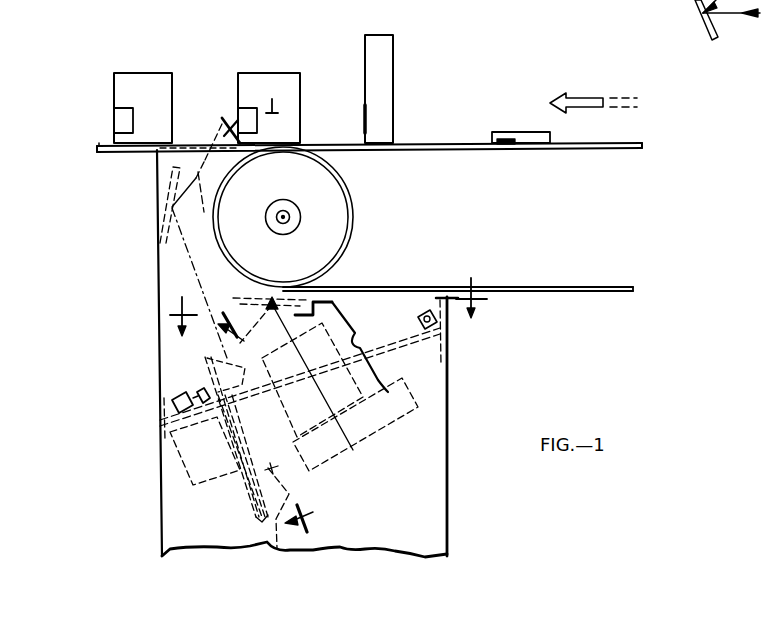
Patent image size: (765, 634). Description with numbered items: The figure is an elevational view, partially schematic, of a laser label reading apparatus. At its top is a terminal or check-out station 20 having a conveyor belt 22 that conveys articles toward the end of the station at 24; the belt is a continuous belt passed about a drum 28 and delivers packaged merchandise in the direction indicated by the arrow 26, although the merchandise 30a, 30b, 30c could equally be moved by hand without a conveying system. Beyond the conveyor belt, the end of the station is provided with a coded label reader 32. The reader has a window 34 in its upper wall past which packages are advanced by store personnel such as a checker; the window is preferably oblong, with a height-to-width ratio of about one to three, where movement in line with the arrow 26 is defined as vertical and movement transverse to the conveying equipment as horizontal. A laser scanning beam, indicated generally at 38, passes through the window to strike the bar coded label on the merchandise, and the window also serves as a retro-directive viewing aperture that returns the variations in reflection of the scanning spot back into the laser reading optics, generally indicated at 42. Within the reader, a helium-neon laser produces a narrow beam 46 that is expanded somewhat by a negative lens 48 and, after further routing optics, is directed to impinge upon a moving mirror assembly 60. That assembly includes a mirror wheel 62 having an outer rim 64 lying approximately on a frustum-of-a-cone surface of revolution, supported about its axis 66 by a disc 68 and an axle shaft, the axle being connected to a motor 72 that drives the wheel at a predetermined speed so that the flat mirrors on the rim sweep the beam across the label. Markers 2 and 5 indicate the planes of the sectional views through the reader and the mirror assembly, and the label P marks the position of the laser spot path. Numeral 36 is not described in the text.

The check-out station 20 is at (198, 47).
The conveyor belt 22 is at (498, 148).
The end of the station 24 is at (90, 136).
The arrow 26 is at (586, 98).
The drum 28 is at (352, 217).
The merchandise 30a is at (173, 84).
The merchandise 30b is at (300, 85).
The merchandise 30c is at (394, 58).
The coded label reader 32 is at (118, 209).
The window 34 is at (200, 144).
The guide 36 is at (99, 145).
The laser scanning beam 38 is at (233, 123).
The laser reading optics 42 is at (337, 373).
The narrow beam 46 is at (200, 391).
The negative lens 48 is at (220, 420).
The moving mirror assembly 60 is at (130, 499).
The mirror wheel 62 is at (231, 492).
The outer rim 64 is at (269, 549).
The axis 66 is at (312, 466).
The disc 68 is at (252, 485).
The motor 72 is at (200, 483).
The section line 2- 2 is at (328, 295).
The section line 5- 5 is at (274, 419).
The print position P is at (243, 132).